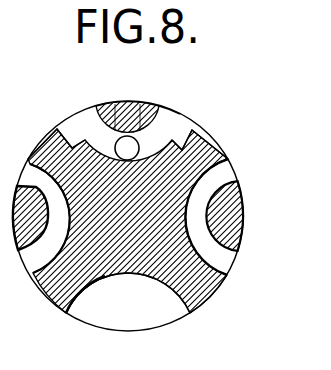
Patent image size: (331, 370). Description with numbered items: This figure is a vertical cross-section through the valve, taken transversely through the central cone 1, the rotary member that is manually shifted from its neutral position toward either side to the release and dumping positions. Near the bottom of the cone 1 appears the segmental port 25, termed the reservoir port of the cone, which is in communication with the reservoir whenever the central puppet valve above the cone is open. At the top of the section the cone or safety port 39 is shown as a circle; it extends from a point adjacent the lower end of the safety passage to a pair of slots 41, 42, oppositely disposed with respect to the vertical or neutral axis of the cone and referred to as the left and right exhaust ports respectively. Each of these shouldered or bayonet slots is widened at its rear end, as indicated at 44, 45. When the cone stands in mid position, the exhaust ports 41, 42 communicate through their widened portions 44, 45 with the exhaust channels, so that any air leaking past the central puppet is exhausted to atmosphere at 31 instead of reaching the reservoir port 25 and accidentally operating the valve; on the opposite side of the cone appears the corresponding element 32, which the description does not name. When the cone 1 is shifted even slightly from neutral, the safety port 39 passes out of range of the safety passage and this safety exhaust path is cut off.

The central cone 1 is at (130, 215).
The segmental port 25 is at (128, 293).
The atmosphere 31 is at (47, 209).
The right passage insert 32 is at (190, 213).
The safety port 39 is at (127, 148).
The left exhaust port 41 is at (86, 112).
The right exhaust port 42 is at (168, 112).
The widened portion 44 is at (64, 128).
The widened portion 45 is at (193, 128).